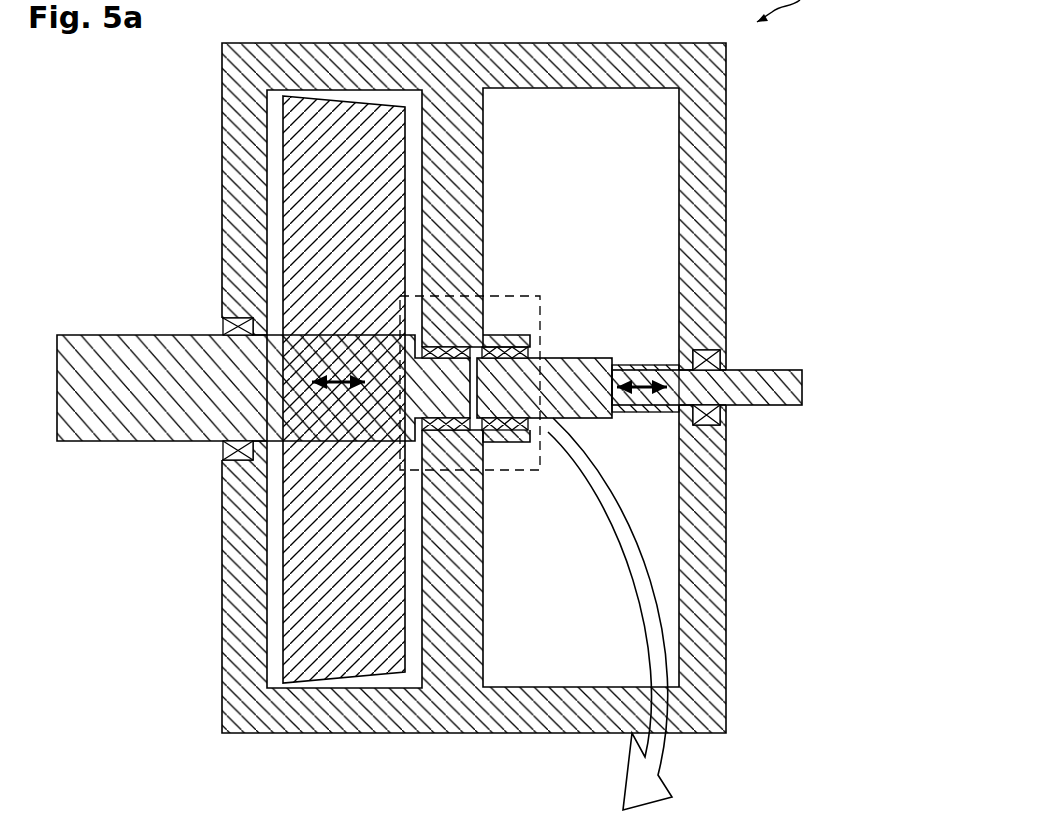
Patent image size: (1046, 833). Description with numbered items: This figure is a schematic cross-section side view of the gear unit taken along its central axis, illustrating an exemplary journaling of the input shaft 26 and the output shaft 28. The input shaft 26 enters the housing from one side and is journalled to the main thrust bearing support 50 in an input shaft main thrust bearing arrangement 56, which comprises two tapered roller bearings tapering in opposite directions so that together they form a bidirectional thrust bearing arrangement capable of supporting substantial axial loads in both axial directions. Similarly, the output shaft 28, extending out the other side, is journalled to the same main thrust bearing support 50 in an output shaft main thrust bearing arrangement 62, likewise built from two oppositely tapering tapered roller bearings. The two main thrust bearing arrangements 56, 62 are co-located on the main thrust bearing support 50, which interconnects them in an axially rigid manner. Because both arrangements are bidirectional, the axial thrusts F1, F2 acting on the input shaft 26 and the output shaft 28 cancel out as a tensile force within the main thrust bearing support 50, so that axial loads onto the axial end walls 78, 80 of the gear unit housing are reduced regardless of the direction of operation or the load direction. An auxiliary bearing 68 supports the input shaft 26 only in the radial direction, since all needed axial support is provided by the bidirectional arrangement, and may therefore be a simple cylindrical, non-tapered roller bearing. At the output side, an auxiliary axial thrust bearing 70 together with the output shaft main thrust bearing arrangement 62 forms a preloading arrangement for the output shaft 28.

The input shaft 26 is at (128, 357).
The output shaft 28 is at (780, 370).
The main thrust bearing support 50 is at (472, 335).
The input shaft main thrust bearing arrangement 56 is at (450, 447).
The output shaft main thrust bearing arrangement 62 is at (500, 446).
The auxiliary bearing 68 is at (222, 318).
The auxiliary axial thrust bearing 70 is at (700, 350).
The axial end wall 78 is at (228, 485).
The axial end wall 80 is at (718, 472).
The axial thrust F1 is at (325, 388).
The axial thrust F2 is at (650, 367).